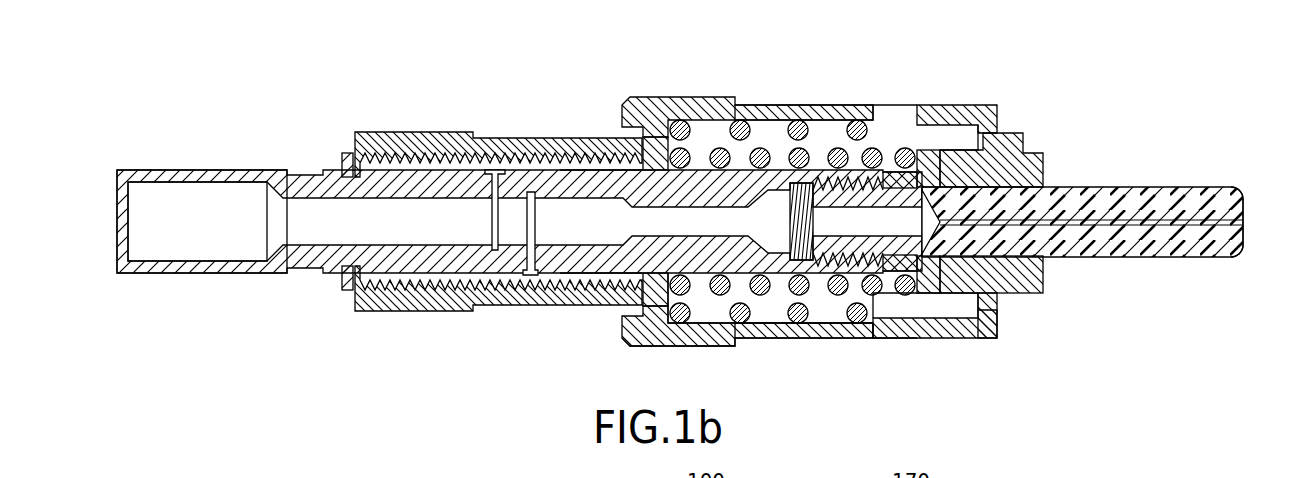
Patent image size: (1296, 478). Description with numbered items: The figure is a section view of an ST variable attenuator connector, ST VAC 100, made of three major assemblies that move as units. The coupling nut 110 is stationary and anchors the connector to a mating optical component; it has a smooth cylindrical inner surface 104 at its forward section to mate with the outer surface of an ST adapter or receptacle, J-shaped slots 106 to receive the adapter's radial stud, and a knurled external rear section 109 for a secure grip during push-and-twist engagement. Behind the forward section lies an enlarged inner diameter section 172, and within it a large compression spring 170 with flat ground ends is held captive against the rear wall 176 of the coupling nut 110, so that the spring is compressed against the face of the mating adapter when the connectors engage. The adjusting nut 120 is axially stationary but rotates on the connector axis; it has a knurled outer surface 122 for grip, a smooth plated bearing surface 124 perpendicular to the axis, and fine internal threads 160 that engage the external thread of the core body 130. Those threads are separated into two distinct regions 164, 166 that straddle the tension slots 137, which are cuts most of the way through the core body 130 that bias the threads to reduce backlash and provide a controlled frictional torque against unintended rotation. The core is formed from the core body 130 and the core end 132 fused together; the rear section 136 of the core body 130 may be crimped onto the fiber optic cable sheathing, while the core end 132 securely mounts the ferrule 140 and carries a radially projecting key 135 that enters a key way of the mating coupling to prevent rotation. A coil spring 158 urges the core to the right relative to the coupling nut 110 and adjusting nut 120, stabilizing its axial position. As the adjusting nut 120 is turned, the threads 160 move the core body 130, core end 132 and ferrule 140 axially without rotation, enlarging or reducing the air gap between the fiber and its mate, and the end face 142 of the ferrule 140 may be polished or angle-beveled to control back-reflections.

The ST VAC 100 is at (224, 72).
The smooth cylindrical inner surface 104 is at (957, 130).
The J-shaped slots 106 is at (887, 338).
The knurled external rear section 109 is at (672, 349).
The coupling nut 110 is at (630, 96).
The adjusting nut 120 is at (395, 298).
The knurled outer surface 122 is at (407, 135).
The surface 124 is at (650, 157).
The core body 130 is at (308, 186).
The core end 132 is at (1033, 290).
The key 135 is at (1010, 147).
The section 136 is at (282, 158).
The tension slots 137 is at (497, 203).
The ferrule 140 is at (1137, 259).
The end face 142 is at (1245, 238).
The coil spring 158 is at (898, 157).
The threads 160 is at (421, 176).
The thread region 164 is at (476, 168).
The thread region 166 is at (568, 178).
The compression spring 170 is at (848, 115).
The enlarged inner diameter section 172 is at (779, 330).
The rear wall 176 is at (700, 127).